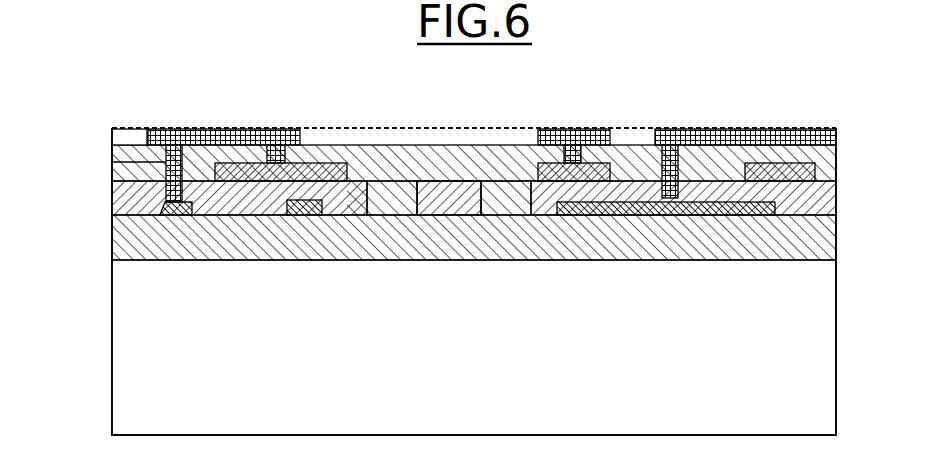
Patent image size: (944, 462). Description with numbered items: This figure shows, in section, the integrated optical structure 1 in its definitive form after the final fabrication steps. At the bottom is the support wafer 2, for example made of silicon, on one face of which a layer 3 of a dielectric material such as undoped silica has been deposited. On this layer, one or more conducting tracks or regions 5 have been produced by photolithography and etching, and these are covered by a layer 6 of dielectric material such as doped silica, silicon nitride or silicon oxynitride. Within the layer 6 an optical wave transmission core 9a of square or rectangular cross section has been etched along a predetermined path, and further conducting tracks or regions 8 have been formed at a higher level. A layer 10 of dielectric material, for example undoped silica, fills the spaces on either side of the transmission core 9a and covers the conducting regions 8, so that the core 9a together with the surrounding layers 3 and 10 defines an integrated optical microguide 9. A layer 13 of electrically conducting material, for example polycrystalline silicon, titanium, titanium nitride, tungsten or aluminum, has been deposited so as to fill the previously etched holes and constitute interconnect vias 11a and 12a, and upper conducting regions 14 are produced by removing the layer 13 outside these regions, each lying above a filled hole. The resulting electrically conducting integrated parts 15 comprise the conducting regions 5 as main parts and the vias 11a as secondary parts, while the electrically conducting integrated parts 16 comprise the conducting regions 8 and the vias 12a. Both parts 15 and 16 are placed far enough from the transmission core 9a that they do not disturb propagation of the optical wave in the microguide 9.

The integrated optical structure 1 is at (820, 118).
The support wafer 2 is at (812, 328).
The layer 3 is at (812, 238).
The conducting tracks or regions 5 is at (110, 211).
The layer 6 is at (812, 200).
The conducting tracks or regions 8 is at (200, 212).
The integrated optical microguide 9 is at (458, 173).
The optical wave transmission core 9a is at (440, 180).
The layer 10 is at (707, 165).
The interconnect via 11a is at (131, 142).
The interconnect via 12a is at (312, 143).
The layer 13 is at (507, 128).
The upper conducting regions 14 is at (222, 136).
The electrically conducting integrated parts 15 is at (158, 190).
The electrically conducting integrated parts 16 is at (312, 152).